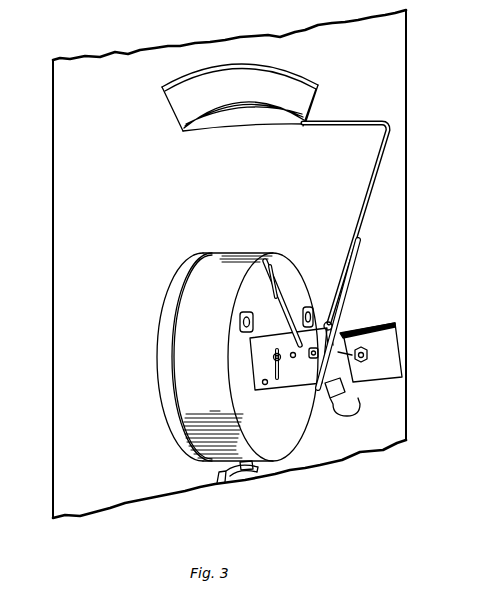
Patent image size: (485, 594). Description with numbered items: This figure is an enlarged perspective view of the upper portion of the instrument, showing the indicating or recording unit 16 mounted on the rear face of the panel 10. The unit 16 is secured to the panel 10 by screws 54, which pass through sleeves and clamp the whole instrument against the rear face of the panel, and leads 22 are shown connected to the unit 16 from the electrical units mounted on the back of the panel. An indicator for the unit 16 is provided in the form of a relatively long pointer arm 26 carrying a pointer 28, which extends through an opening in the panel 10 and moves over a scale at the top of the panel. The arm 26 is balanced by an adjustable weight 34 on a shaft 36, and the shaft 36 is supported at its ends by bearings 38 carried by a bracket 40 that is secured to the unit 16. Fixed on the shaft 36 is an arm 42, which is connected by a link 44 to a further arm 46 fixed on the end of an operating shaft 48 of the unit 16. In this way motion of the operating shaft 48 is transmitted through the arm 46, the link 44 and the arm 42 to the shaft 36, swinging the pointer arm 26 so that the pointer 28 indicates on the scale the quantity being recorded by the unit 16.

The panel 10 is at (387, 250).
The indicating or recording unit 16 is at (190, 327).
The leads 22 is at (215, 485).
The pointer arm 26 is at (377, 189).
The pointer 28 is at (298, 114).
The adjustable weight 34 is at (340, 375).
The shaft 36 is at (396, 325).
The bearings 38 is at (368, 355).
The bracket 40 is at (390, 370).
The arm 42 is at (331, 322).
The link 44 is at (332, 312).
The arm 46 is at (287, 295).
The operating shaft 48 is at (274, 267).
The screws 54 is at (247, 320).